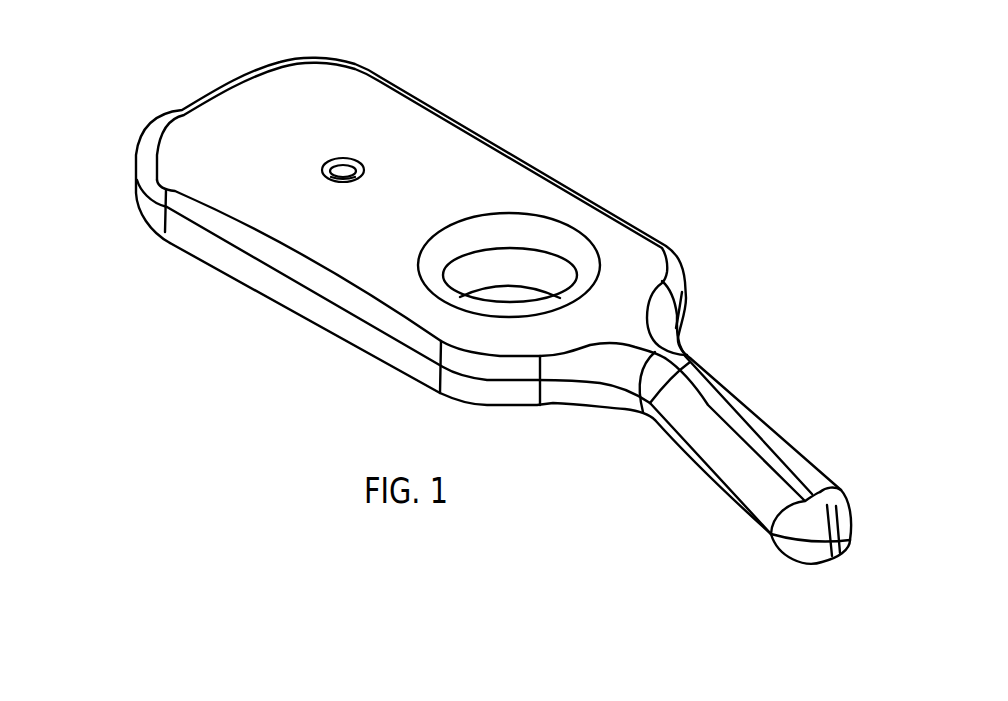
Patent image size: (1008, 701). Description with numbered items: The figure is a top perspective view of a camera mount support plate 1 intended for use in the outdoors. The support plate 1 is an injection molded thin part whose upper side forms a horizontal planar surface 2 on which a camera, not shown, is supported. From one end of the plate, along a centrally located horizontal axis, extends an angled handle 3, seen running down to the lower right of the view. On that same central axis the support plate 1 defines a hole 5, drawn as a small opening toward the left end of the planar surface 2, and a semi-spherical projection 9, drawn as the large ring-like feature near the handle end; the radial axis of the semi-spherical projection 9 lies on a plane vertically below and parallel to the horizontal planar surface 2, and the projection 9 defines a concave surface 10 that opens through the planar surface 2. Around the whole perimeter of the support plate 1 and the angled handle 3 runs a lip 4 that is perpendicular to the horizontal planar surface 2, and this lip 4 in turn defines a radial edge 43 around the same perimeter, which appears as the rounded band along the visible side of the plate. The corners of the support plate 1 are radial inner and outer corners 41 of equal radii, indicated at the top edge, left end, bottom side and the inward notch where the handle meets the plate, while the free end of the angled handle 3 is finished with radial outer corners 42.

The support plate 1 is at (204, 87).
The horizontal planar surface 2 is at (423, 135).
The angled handle 3 is at (723, 500).
The lip 4 is at (230, 260).
The hole 5 is at (345, 157).
The semi-spherical projection 9 is at (544, 278).
The concave surface 10 is at (491, 298).
The radial inner and outer corners 41 is at (308, 55).
The radial outer corners 42 is at (853, 508).
The radial edge 43 is at (323, 285).